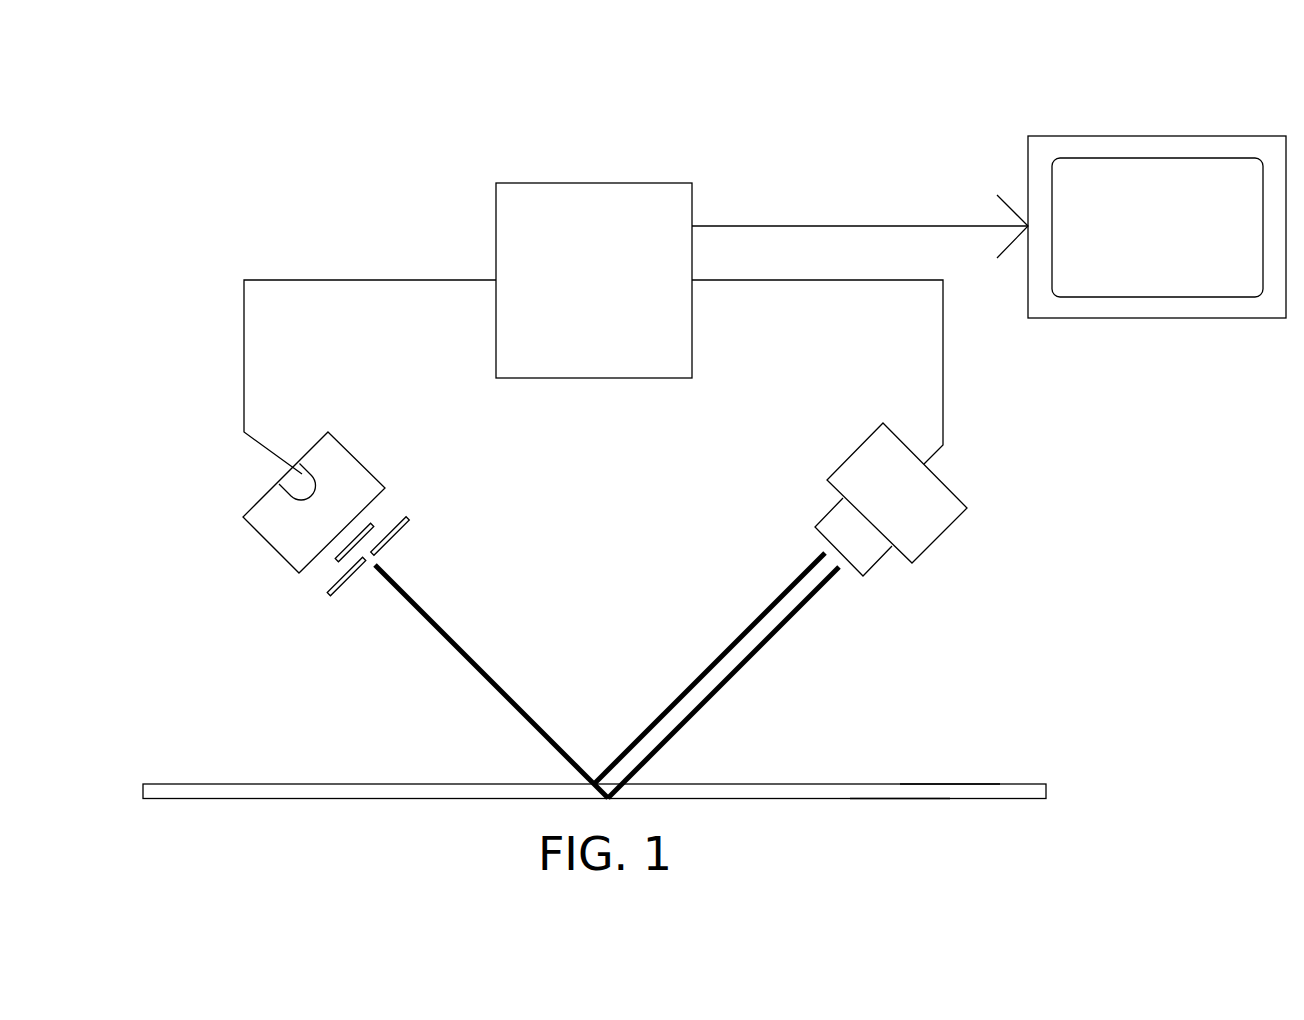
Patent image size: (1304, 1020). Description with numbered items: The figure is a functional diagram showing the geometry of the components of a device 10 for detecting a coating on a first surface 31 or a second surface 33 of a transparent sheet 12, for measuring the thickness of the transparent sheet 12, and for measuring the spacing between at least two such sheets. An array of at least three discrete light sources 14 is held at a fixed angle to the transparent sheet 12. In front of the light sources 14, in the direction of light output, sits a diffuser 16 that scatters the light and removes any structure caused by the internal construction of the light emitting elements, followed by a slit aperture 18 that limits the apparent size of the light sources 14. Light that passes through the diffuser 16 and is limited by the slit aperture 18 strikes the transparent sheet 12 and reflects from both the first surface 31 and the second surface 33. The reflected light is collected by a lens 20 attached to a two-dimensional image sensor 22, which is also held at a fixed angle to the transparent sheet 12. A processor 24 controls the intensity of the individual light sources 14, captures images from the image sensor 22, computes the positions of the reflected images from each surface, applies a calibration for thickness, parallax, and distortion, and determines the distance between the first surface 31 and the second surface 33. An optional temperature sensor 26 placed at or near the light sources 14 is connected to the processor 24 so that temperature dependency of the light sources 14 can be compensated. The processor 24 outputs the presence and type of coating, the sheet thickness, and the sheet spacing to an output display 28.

The device 10 is at (297, 167).
The transparent sheet 12 is at (1023, 791).
The light sources 14 is at (258, 498).
The diffuser 16 is at (372, 523).
The slit aperture 18 is at (373, 552).
The lens 20 is at (882, 562).
The 2D image sensor 22 is at (952, 490).
The processor 24 is at (520, 182).
The temperature sensor 26 is at (297, 475).
The output display 28 is at (1111, 135).
The first surface 31 is at (947, 784).
The second surface 33 is at (897, 798).